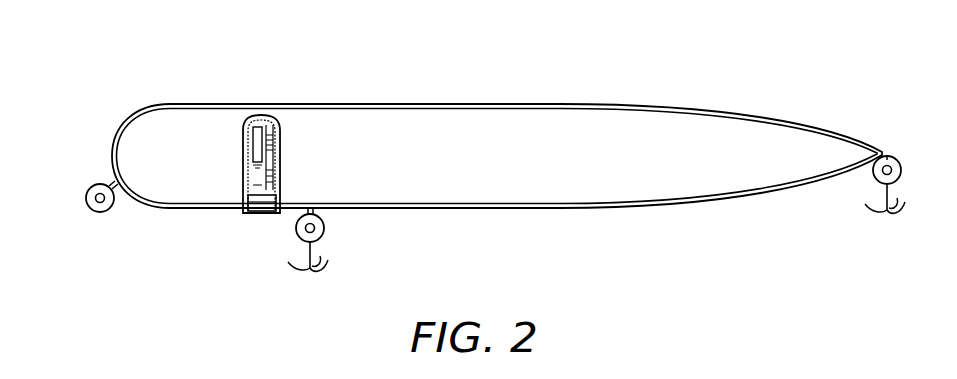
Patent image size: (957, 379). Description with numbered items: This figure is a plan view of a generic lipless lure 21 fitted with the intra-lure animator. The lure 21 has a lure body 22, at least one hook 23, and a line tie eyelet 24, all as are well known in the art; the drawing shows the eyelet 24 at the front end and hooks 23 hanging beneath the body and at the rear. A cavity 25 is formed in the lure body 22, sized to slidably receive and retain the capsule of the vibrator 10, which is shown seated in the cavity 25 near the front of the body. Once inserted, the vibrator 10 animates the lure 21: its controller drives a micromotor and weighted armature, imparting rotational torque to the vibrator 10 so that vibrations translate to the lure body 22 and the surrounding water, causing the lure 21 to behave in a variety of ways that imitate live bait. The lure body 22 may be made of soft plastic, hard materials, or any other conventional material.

The vibrator 10 is at (247, 218).
The lipless lure 21 is at (475, 122).
The lure body 22 is at (217, 104).
The hook 23 is at (316, 272).
The line tie eyelet 24 is at (88, 206).
The cavity 25 is at (243, 147).